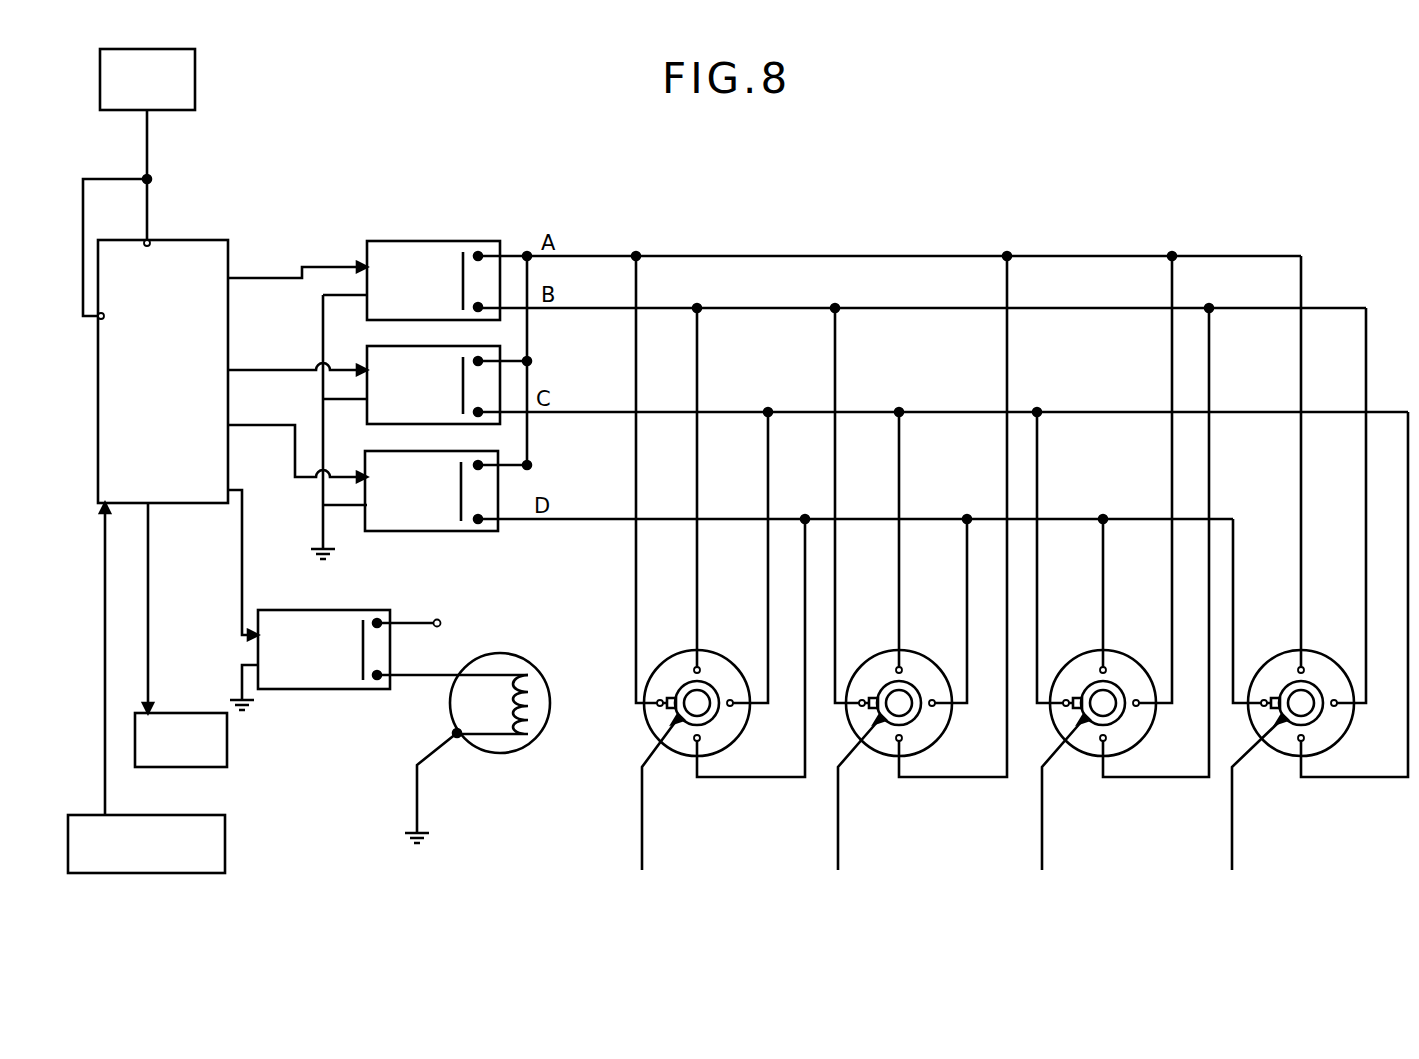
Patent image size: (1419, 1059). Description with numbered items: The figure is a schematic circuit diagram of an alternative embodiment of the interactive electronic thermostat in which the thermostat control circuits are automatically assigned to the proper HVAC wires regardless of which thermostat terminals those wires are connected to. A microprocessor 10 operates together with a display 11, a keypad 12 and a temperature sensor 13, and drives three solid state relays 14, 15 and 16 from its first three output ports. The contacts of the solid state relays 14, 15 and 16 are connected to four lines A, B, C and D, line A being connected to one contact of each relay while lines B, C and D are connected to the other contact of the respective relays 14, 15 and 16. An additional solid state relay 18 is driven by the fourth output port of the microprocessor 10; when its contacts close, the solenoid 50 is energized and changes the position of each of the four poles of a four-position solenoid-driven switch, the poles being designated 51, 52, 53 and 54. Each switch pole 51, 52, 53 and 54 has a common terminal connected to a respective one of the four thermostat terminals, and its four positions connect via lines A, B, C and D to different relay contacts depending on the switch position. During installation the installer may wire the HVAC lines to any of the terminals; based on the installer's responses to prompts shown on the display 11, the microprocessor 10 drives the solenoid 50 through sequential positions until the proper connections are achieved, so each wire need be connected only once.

The microprocessor 10 is at (230, 250).
The display 11 is at (227, 745).
The keypad 12 is at (225, 830).
The temperature sensor 13 is at (195, 80).
The solid state relay 14 is at (425, 241).
The solid state relay 15 is at (380, 346).
The solid state relay 16 is at (425, 531).
The solid state relay 18 is at (313, 689).
The solenoid 50 is at (531, 684).
The switch pole 51 is at (730, 743).
The switch pole 52 is at (932, 743).
The switch pole 53 is at (1136, 743).
The switch pole 54 is at (1334, 743).